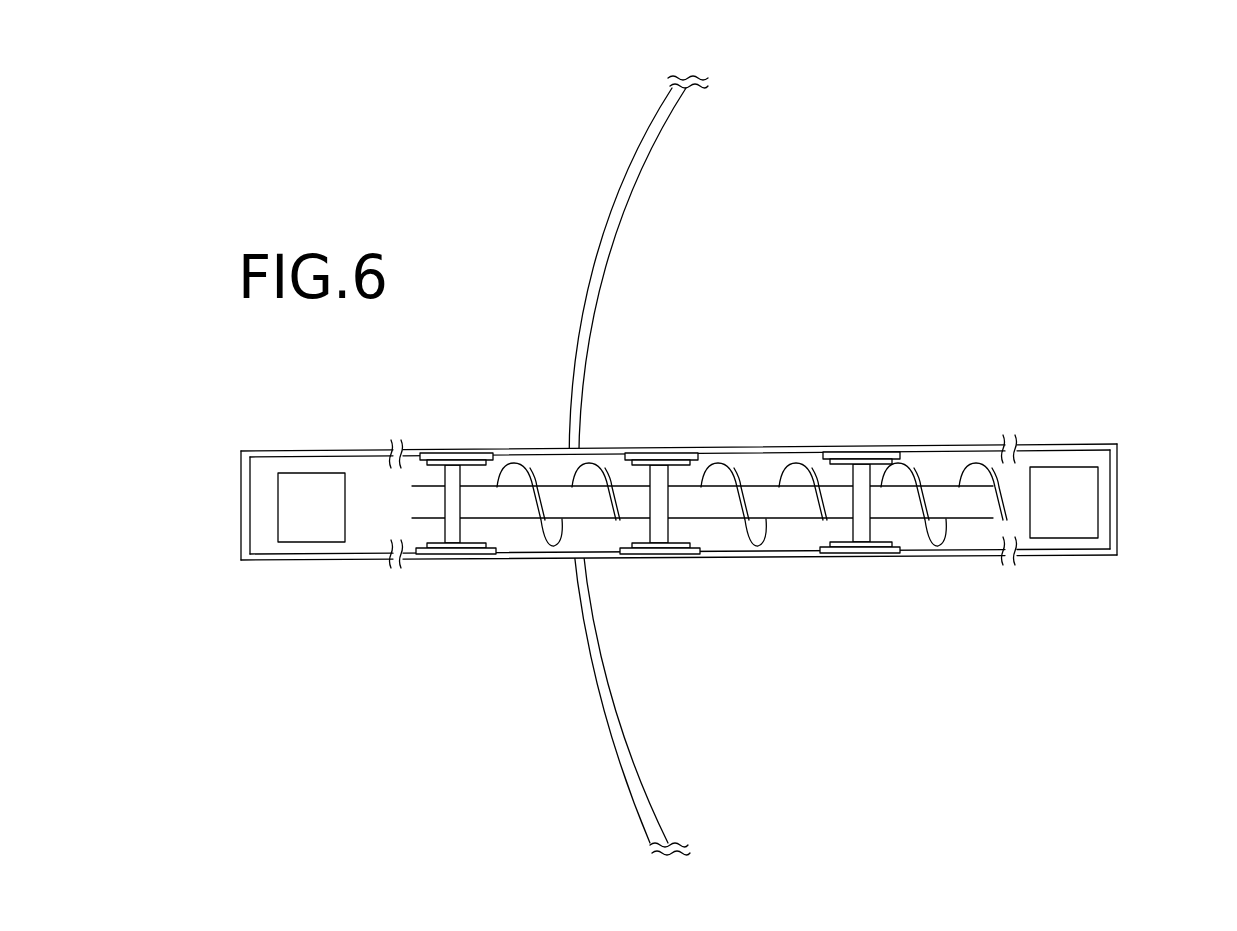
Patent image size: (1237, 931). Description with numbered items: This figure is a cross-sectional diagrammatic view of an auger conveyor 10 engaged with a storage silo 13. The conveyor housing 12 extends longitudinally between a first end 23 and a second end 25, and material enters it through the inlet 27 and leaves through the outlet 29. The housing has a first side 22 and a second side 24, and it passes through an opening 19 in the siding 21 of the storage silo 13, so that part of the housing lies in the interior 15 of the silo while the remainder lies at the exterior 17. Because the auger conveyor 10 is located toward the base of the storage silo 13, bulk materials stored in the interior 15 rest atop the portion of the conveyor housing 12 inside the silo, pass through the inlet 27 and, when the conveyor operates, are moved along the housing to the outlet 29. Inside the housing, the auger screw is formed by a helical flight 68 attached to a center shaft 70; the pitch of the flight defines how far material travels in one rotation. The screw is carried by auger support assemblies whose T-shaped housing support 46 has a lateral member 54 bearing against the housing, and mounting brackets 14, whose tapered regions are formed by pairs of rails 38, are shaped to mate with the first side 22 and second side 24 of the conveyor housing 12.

The auger conveyor 10 is at (235, 443).
The conveyor housing 12 is at (657, 546).
The storage silo 13 is at (601, 431).
The mounting bracket 14 is at (729, 529).
The interior 15 is at (784, 222).
The exterior 17 is at (524, 254).
The opening 19 is at (572, 561).
The siding 21 is at (655, 118).
The first side 22 is at (351, 448).
The first end 23 is at (1117, 496).
The second side 24 is at (353, 565).
The second end 25 is at (240, 500).
The inlet 27 is at (1067, 467).
The outlet 29 is at (292, 542).
The rails 38 is at (630, 458).
The housing support 46 is at (454, 527).
The lateral member 54 is at (870, 477).
The helical flight 68 is at (733, 460).
The center shaft 70 is at (777, 462).